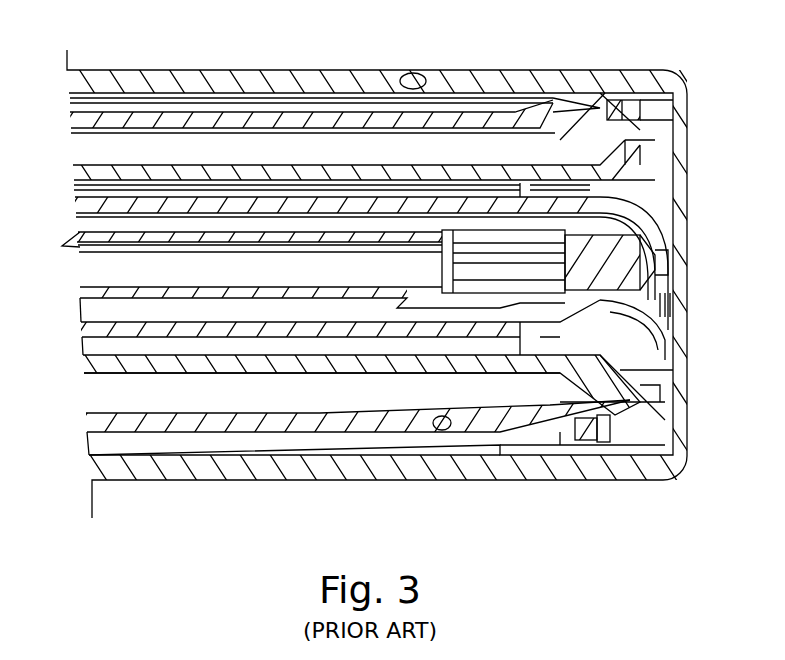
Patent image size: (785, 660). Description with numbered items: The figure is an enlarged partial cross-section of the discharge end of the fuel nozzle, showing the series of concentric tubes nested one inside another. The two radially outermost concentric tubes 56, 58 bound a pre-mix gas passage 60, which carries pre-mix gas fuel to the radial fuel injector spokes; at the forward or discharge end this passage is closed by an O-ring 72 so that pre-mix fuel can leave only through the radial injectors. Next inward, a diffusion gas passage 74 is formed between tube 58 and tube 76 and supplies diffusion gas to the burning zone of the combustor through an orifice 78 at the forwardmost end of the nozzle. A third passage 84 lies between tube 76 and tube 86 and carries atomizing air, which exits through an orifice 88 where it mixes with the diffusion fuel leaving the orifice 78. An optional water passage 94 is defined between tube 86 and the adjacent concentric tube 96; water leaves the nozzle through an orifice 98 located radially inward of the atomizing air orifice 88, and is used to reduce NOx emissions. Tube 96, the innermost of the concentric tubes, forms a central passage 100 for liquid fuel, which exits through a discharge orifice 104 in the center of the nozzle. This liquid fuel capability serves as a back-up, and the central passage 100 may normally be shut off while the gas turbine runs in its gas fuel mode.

The radially outermost concentric tube 56 is at (335, 68).
The concentric tube 58 is at (203, 420).
The pre-mix gas passage 60 is at (163, 443).
The O-ring 72 is at (580, 448).
The diffusion gas passage 74 is at (122, 393).
The concentric tube 76 is at (231, 369).
The orifice 78 is at (660, 357).
The third passage 84 is at (328, 345).
The concentric tube 86 is at (252, 320).
The orifice 88 is at (658, 310).
The water passage 94 is at (102, 312).
The concentric tube 96 is at (113, 287).
The orifice 98 is at (650, 290).
The central passage 100 is at (287, 280).
The discharge orifice 104 is at (655, 262).